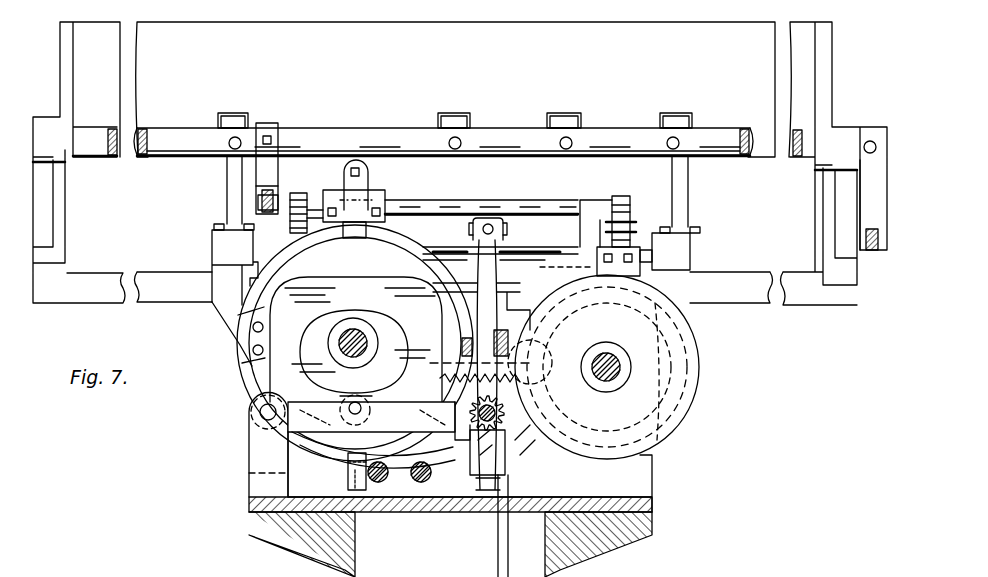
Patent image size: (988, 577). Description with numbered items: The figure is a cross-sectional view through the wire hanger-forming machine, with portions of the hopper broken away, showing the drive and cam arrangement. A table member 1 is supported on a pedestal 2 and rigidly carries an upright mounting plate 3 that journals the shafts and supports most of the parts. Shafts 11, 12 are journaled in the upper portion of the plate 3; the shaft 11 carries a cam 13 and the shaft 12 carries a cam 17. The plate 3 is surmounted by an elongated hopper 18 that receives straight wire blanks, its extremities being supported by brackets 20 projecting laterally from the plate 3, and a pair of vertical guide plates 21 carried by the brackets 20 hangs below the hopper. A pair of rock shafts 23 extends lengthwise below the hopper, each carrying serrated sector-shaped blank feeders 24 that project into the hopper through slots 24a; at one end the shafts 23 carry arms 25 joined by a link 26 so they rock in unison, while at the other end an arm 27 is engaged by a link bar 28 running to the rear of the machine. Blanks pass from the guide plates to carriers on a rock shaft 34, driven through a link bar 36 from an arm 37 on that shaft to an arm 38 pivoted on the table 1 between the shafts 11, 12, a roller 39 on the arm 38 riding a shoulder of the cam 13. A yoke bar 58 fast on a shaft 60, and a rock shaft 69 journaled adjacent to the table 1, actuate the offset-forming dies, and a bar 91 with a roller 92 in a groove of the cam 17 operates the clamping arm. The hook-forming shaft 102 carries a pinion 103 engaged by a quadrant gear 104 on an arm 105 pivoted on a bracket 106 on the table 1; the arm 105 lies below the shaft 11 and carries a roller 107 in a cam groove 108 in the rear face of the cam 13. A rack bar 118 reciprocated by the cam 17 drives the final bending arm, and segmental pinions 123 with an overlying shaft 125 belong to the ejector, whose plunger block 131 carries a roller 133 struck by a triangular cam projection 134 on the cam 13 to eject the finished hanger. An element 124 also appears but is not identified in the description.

The table member 1 is at (655, 506).
The pedestal 2 is at (655, 536).
The upright mounting plate 3 is at (655, 460).
The shaft 11 is at (356, 330).
The shaft 12 is at (602, 344).
The cam 13 is at (404, 256).
The cam 17 is at (627, 367).
The hopper 18 is at (660, 22).
The brackets 20 is at (178, 302).
The vertical plates 21 is at (227, 191).
The rock shafts 23 is at (510, 127).
The blank feeders 24 is at (568, 114).
The slots 24a is at (674, 114).
The arms 25 is at (868, 203).
The link 26 is at (873, 250).
The arm 27 is at (283, 130).
The link bar 28 is at (278, 203).
The rock shaft 34 is at (530, 248).
The link bar 36 is at (488, 217).
The arm 37 is at (478, 302).
The arm 38 is at (507, 300).
The roller 39 is at (462, 342).
The yoke bar 58 is at (500, 435).
The shaft 60 is at (422, 484).
The rock shaft 69 is at (378, 484).
The bar 91 is at (580, 305).
The roller 92 is at (538, 352).
The shaft 102 is at (505, 415).
The pinion 103 is at (540, 452).
The quadrant gear 104 is at (445, 424).
The arm 105 is at (332, 440).
The bracket 106 is at (256, 462).
The roller 107 is at (372, 386).
The cam groove 108 is at (258, 400).
The rack bar 118 is at (595, 382).
The segmental pinions 123 is at (610, 236).
The bracket 124 is at (616, 196).
The shaft 125 is at (410, 200).
The block 131 is at (369, 172).
The roller 133 is at (367, 235).
The cam projection 134 is at (243, 375).